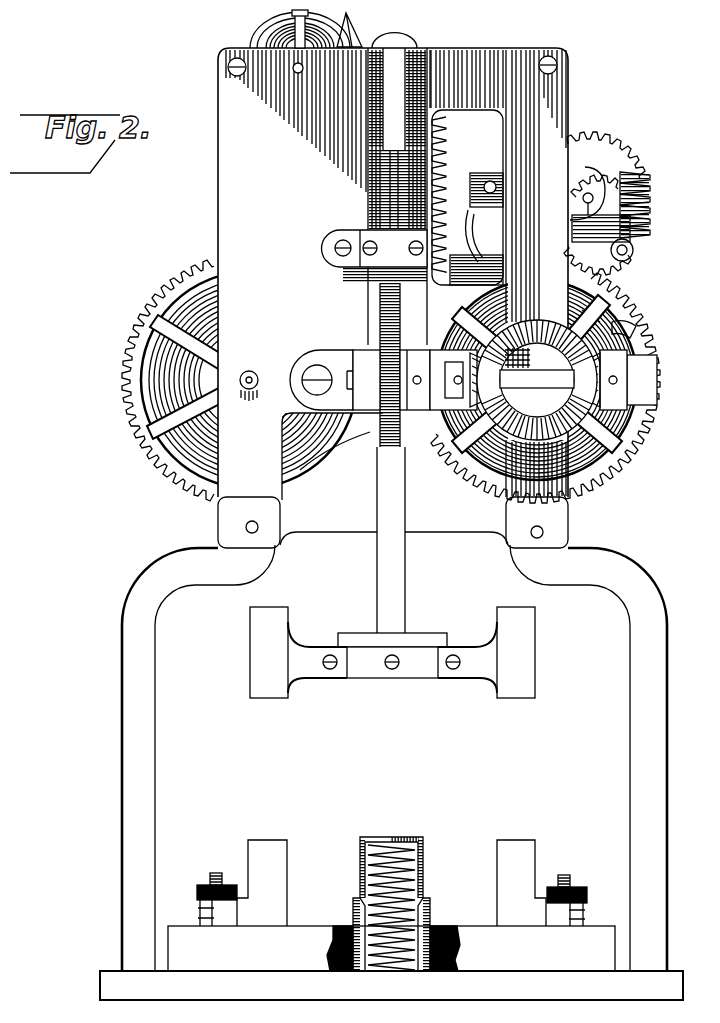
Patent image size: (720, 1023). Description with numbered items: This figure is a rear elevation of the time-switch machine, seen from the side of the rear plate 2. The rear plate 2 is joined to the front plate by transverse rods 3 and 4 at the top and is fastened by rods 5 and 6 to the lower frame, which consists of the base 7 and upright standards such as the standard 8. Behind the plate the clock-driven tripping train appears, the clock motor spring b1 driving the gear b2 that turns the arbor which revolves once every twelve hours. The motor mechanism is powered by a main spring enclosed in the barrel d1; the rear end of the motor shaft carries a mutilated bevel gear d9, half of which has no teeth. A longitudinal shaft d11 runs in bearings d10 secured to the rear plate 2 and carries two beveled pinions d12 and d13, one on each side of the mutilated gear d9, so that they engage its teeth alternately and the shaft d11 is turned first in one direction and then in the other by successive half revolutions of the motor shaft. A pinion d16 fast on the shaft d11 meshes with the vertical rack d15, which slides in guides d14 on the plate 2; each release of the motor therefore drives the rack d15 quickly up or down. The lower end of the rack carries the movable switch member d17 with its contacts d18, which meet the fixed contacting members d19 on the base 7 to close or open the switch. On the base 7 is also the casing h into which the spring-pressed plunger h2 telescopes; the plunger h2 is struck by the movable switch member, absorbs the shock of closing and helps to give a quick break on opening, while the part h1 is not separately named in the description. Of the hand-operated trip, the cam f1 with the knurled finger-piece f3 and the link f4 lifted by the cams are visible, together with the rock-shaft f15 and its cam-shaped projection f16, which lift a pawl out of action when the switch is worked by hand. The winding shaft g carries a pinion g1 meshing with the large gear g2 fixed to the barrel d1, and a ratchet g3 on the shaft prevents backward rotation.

The rear plate 2 is at (226, 188).
The transverse rod 3 is at (672, 732).
The transverse rod 4 is at (555, 62).
The rod 5 is at (253, 534).
The rod 6 is at (538, 536).
The base 7 is at (425, 990).
The upright standard 8 is at (130, 748).
The clock motor spring b1 is at (167, 390).
The gear b2 is at (124, 364).
The inclosing barrel d1 is at (592, 315).
The mutilated bevel gear d9 is at (593, 340).
The bearings d10 is at (643, 367).
The longitudinal shaft d11 is at (545, 390).
The beveled pinion d12 is at (646, 442).
The beveled pinion d13 is at (473, 360).
The guides d14 is at (385, 238).
The vertical rack d15 is at (393, 128).
The pinion d16 is at (380, 452).
The switch member d17 is at (418, 667).
The contacts d18 is at (528, 690).
The contacting members d19 is at (500, 853).
The cam f1 is at (352, 30).
The knurled finger-piece f3 is at (393, 32).
The link or rod f4 is at (448, 275).
The rock-shaft f15 is at (490, 181).
The cam-shaped projection f16 is at (468, 210).
The winding shaft g is at (592, 196).
The gear or pinion g1 is at (577, 162).
The large gear g2 is at (632, 330).
The ratchet g3 is at (587, 173).
The casing h is at (431, 915).
The spring tube h1 is at (424, 852).
The spring-pressed plunger h2 is at (393, 838).